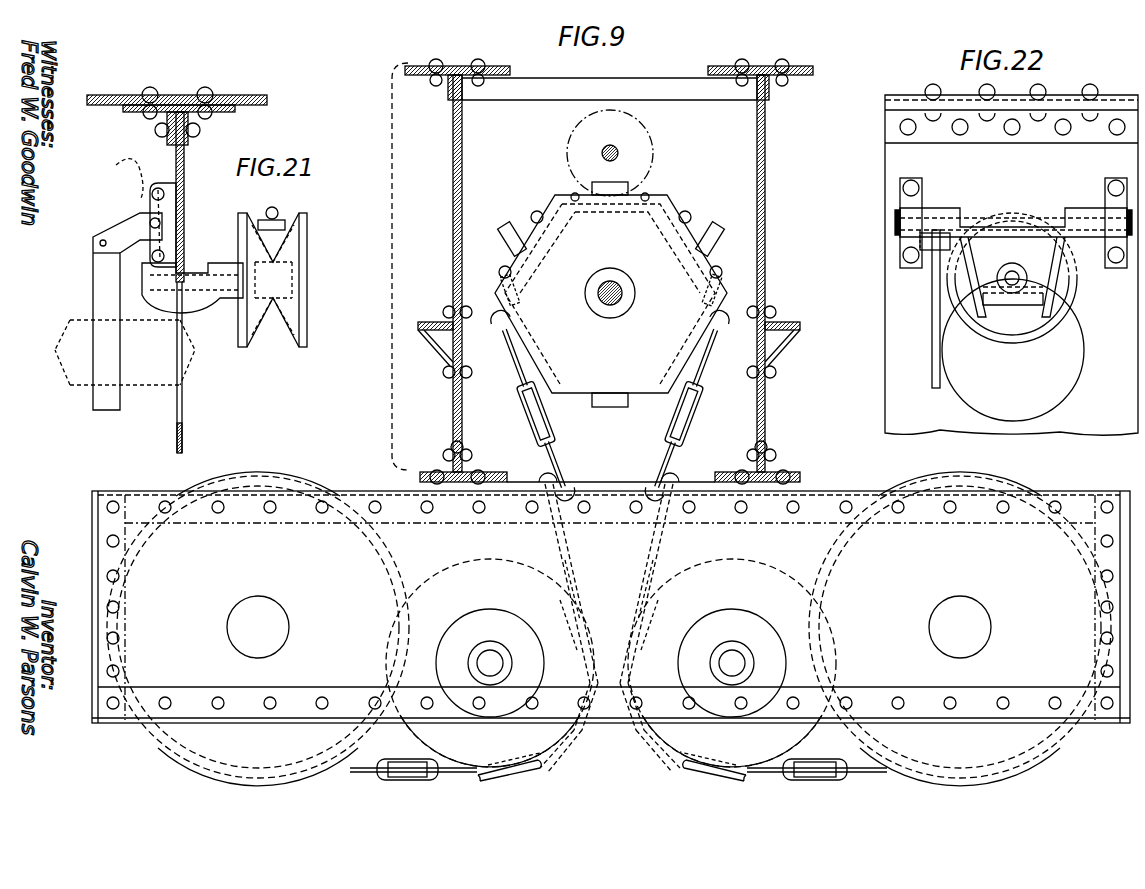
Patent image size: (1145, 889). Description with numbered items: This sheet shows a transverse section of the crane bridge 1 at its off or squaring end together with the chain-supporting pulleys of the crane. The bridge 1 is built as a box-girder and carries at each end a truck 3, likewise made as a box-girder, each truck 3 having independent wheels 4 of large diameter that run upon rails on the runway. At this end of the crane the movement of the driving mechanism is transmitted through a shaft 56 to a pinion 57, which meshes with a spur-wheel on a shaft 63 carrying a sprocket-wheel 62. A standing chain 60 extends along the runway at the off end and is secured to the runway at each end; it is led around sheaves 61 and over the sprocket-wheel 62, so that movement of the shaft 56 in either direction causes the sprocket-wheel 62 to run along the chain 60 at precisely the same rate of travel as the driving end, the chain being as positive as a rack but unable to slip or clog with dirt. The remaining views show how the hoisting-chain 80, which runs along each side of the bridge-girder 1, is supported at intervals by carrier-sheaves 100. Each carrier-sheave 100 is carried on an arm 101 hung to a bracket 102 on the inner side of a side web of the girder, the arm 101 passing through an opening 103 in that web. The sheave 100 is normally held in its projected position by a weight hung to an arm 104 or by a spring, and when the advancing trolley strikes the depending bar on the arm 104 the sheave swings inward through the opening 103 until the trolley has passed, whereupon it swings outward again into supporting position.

In FIG. 9, the bridge 1 is at (392, 262).
In FIG. 9, the truck 3 is at (611, 607).
In FIG. 9, the wheels 4 is at (609, 629).
In FIG. 9, the shaft 56 is at (621, 155).
In FIG. 9, the pinion 57 is at (648, 157).
In FIG. 9, the standing chain 60 is at (618, 553).
In FIG. 9, the sheaves 61 is at (611, 663).
In FIG. 9, the sprocket-wheel 62 is at (611, 294).
In FIG. 9, the shaft 63 is at (598, 293).
In FIG. 21, the hoisting-chain 80 is at (278, 210).
In FIG. 21, the carrier-sheave 100 is at (272, 281).
In FIG. 22, the carrier-sheave 100 is at (1012, 278).
In FIG. 21, the arm 101 is at (192, 288).
In FIG. 22, the arm 101 is at (1013, 262).
In FIG. 21, the bracket 102 is at (154, 225).
In FIG. 22, the bracket 102 is at (998, 223).
In FIG. 21, the opening 103 is at (183, 398).
In FIG. 22, the opening 103 is at (1011, 259).
In FIG. 21, the arm 104 is at (125, 284).
In FIG. 22, the arm 104 is at (936, 225).